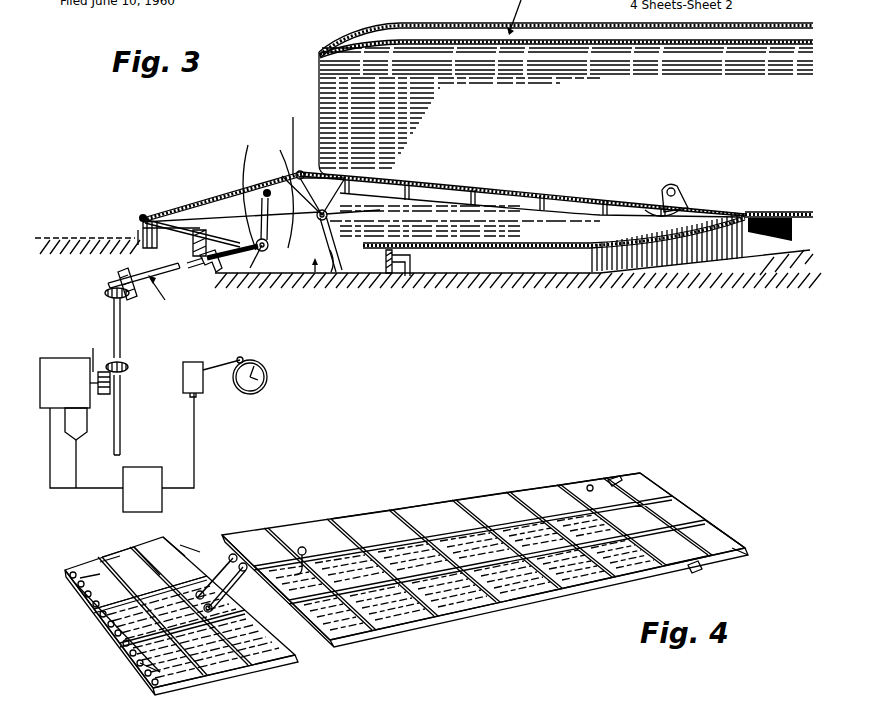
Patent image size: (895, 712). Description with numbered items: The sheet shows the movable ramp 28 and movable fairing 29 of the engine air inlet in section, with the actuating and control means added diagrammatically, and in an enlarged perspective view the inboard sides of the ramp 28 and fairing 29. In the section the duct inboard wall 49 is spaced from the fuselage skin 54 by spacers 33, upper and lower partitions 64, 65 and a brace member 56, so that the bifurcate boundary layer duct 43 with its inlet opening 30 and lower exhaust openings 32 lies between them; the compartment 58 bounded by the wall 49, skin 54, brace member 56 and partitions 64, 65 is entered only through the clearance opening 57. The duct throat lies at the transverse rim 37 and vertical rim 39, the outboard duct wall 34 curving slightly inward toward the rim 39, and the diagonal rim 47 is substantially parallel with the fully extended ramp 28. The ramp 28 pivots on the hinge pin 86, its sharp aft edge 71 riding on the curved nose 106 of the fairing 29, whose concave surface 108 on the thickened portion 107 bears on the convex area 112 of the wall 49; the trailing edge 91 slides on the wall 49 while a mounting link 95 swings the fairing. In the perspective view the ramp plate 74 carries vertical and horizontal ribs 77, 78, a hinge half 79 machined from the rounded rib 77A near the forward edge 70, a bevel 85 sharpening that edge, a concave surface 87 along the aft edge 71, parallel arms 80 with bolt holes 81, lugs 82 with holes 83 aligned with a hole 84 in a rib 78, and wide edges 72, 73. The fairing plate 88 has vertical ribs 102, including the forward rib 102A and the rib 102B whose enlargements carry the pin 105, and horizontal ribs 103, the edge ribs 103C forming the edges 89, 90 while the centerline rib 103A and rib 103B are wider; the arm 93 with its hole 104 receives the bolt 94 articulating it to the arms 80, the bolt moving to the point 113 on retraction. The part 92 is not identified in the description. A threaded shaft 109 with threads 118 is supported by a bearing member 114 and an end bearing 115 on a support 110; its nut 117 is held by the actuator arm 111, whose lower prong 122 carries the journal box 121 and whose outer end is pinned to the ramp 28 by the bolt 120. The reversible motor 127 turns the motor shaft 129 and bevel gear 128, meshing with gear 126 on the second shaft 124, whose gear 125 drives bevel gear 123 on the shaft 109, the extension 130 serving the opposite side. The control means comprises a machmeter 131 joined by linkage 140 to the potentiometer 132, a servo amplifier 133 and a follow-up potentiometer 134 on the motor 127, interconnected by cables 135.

In FIG. 3, the ramp 28 is at (242, 186).
In FIG. 4, the ramp 28 is at (235, 669).
In FIG. 3, the movable fairing 29 is at (530, 192).
In FIG. 4, the movable fairing 29 is at (404, 505).
In FIG. 3, the boundary layer air inlet opening 30 is at (138, 234).
In FIG. 3, the lower exhaust openings 32 is at (522, 17).
In FIG. 3, the streamlined spacers 33 is at (142, 230).
In FIG. 3, the outboard duct wall 34 is at (607, 45).
In FIG. 3, the upper transverse rim portion 37 is at (318, 78).
In FIG. 3, the vertical inlet rim portion 39 is at (320, 50).
In FIG. 3, the bifurcate duct 43 is at (190, 240).
In FIG. 3, the upper forwardly extending rim portion 47 is at (291, 136).
In FIG. 3, the inboard wall 49 is at (775, 212).
In FIG. 3, the fuselage skin 54 is at (58, 236).
In FIG. 3, the brace member 56 is at (408, 272).
In FIG. 3, the elongated opening 57 is at (345, 253).
In FIG. 3, the compartment 58 is at (388, 275).
In FIG. 3, the upper partition 64 is at (632, 255).
In FIG. 3, the lower partition 65 is at (156, 270).
In FIG. 3, the forward vertical edge 70 is at (142, 218).
In FIG. 4, the forward vertical edge 70 is at (130, 665).
In FIG. 3, the aft vertical edge 71 is at (322, 168).
In FIG. 4, the aft vertical edge 71 is at (205, 548).
In FIG. 4, the horizontal edge 72 is at (115, 560).
In FIG. 4, the lower edge 73 is at (210, 681).
In FIG. 4, the ramp plate 74 is at (112, 580).
In FIG. 4, the vertical ribs 77 is at (197, 547).
In FIG. 4, the rounded vertical rib 77A is at (85, 579).
In FIG. 4, the horizontal ribs 78 is at (148, 562).
In FIG. 4, the hinge half 79 is at (68, 574).
In FIG. 3, the arms 80 is at (272, 219).
In FIG. 4, the arms 80 is at (217, 568).
In FIG. 4, the bolt hole 81 is at (245, 571).
In FIG. 4, the lugs 82 is at (150, 614).
In FIG. 4, the bolt hole 83 is at (215, 607).
In FIG. 4, the bolt hole 84 is at (150, 672).
In FIG. 4, the bevel 85 is at (120, 637).
In FIG. 3, the hinge pin 86 is at (143, 214).
In FIG. 4, the concave surface 87 is at (183, 545).
In FIG. 4, the fairing plate 88 is at (598, 486).
In FIG. 4, the lower horizontal edge 89 is at (320, 520).
In FIG. 4, the fairing edge 90 is at (545, 598).
In FIG. 3, the fairing aft vertical edge 91 is at (744, 216).
In FIG. 4, the fairing aft vertical edge 91 is at (682, 505).
In FIG. 4, the end rail 92 is at (318, 642).
In FIG. 3, the arm 93 is at (329, 217).
In FIG. 4, the arm 93 is at (300, 545).
In FIG. 3, the bolt 94 is at (336, 244).
In FIG. 3, the mounting link 95 is at (670, 184).
In FIG. 4, the vertical ribs 102 is at (470, 505).
In FIG. 4, the forward vertical rib 102A is at (410, 598).
In FIG. 4, the vertical rib 102B is at (560, 481).
In FIG. 4, the horizontal ribs 103 is at (632, 551).
In FIG. 4, the centerline rib 103A is at (643, 506).
In FIG. 4, the horizontal rib 103B is at (692, 530).
In FIG. 4, the edge ribs 103C is at (378, 508).
In FIG. 4, the vertical hole 104 is at (297, 575).
In FIG. 4, the upper pin 105 is at (700, 570).
In FIG. 3, the nose portion 106 is at (350, 216).
In FIG. 4, the nose portion 106 is at (737, 552).
In FIG. 4, the thickened portion 107 is at (615, 480).
In FIG. 4, the concave surface 108 is at (732, 545).
In FIG. 3, the threaded shaft 109 is at (167, 297).
In FIG. 3, the support 110 is at (266, 252).
In FIG. 3, the actuator arm 111 is at (262, 190).
In FIG. 3, the convex area 112 is at (742, 236).
In FIG. 3, the point 113 is at (315, 274).
In FIG. 3, the bearing member 114 is at (208, 270).
In FIG. 3, the end bearing 115 is at (280, 150).
In FIG. 3, the nut 117 is at (190, 210).
In FIG. 3, the male threads 118 is at (232, 260).
In FIG. 3, the bolt 120 is at (248, 150).
In FIG. 3, the lower journal box 121 is at (260, 252).
In FIG. 3, the lower prong 122 is at (205, 196).
In FIG. 3, the bevel gear 123 is at (118, 280).
In FIG. 3, the second shaft 124 is at (122, 328).
In FIG. 3, the bevel gear 125 is at (108, 300).
In FIG. 3, the bevel gear 126 is at (130, 364).
In FIG. 3, the reversible motor 127 is at (82, 393).
In FIG. 3, the bevel gear 128 is at (112, 384).
In FIG. 3, the motor shaft 129 is at (93, 348).
In FIG. 3, the right-hand extension 130 is at (122, 432).
In FIG. 3, the machmeter 131 is at (268, 377).
In FIG. 3, the machmeter-regulated potentiometer 132 is at (200, 390).
In FIG. 3, the servo amplifier 133 is at (150, 467).
In FIG. 3, the follow-up potentiometer 134 is at (103, 450).
In FIG. 3, the cables 135 is at (194, 458).
In FIG. 3, the mechanical linkage 140 is at (245, 360).